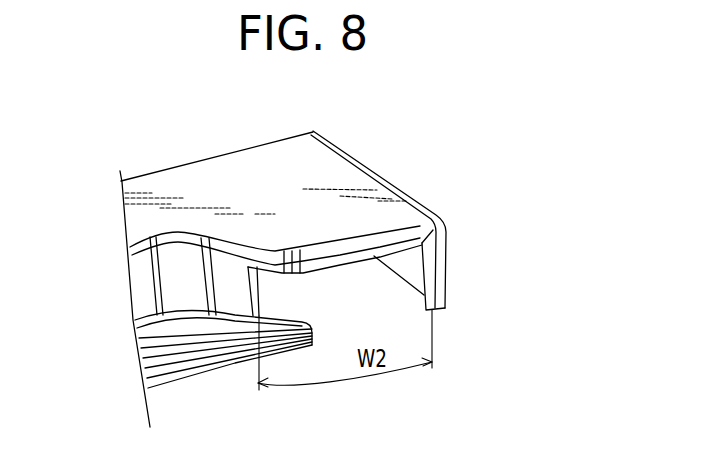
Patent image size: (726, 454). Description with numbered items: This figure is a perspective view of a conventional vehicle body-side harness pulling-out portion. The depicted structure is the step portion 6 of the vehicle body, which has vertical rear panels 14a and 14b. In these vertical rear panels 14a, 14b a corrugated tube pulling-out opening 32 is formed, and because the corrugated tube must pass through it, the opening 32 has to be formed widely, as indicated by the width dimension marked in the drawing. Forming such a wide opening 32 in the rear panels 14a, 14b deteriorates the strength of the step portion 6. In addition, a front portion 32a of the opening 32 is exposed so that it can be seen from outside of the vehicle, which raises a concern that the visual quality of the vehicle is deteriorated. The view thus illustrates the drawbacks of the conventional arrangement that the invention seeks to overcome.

The vertical rear panel 14a is at (236, 278).
The vertical rear panel 14b is at (368, 252).
The corrugated tube pulling-out opening 32 is at (353, 285).
The front portion of the opening 32a is at (268, 288).
The step portion 6 is at (177, 351).